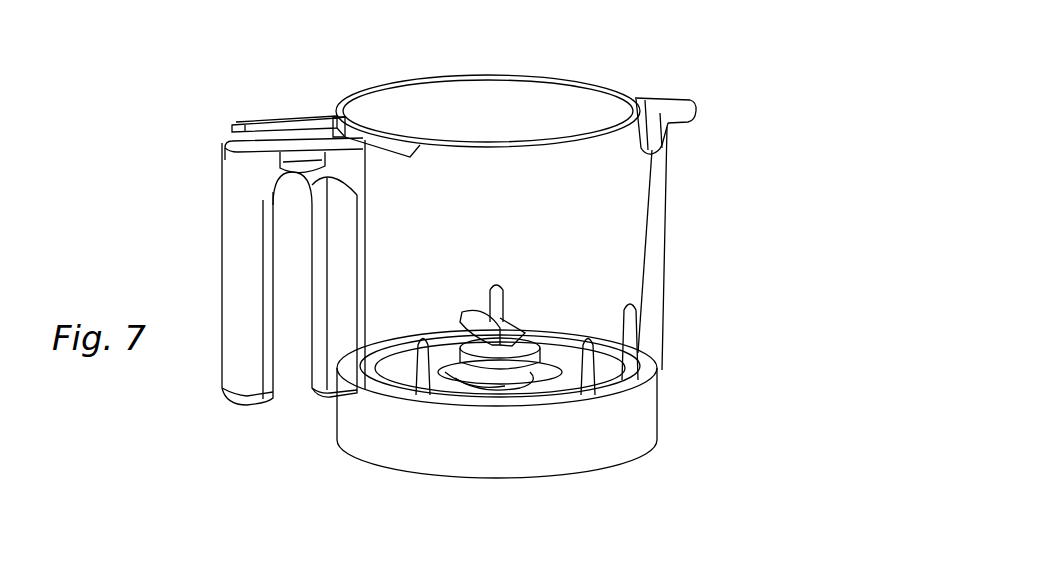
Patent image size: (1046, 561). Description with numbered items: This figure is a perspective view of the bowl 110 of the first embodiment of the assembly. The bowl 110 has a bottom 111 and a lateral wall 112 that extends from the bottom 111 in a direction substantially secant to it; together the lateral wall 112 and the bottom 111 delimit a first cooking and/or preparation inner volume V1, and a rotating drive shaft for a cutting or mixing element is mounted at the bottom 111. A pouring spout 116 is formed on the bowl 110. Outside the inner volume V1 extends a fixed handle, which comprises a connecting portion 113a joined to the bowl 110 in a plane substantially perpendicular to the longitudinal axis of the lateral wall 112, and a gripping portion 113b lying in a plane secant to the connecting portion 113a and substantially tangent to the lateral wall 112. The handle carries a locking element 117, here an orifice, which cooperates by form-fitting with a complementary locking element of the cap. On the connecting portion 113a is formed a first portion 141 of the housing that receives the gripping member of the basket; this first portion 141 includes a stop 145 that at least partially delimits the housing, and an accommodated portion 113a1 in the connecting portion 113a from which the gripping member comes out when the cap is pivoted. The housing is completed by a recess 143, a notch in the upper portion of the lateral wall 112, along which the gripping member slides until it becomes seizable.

The bowl 110 is at (290, 463).
The bottom 111 is at (640, 423).
The lateral wall 112 is at (655, 267).
The connecting portion 113a is at (273, 188).
The accommodated portion 113a1 is at (270, 152).
The gripping portion 113b is at (240, 282).
The pouring spout 116 is at (670, 103).
The locking element 117 is at (300, 161).
The first portion of the housing 141 is at (293, 143).
The recess 143 is at (362, 140).
The stop 145 is at (253, 128).
The first cooking and/or preparation inner volume V1 is at (520, 130).